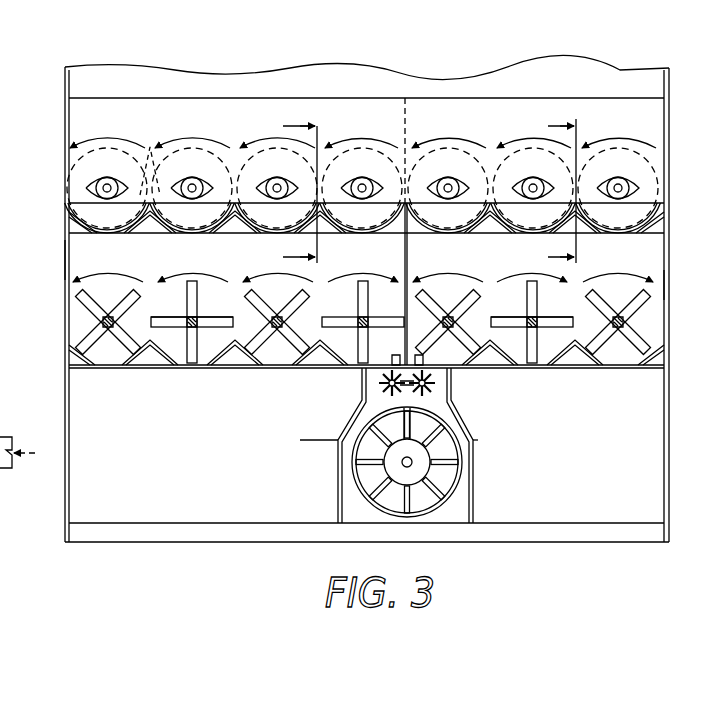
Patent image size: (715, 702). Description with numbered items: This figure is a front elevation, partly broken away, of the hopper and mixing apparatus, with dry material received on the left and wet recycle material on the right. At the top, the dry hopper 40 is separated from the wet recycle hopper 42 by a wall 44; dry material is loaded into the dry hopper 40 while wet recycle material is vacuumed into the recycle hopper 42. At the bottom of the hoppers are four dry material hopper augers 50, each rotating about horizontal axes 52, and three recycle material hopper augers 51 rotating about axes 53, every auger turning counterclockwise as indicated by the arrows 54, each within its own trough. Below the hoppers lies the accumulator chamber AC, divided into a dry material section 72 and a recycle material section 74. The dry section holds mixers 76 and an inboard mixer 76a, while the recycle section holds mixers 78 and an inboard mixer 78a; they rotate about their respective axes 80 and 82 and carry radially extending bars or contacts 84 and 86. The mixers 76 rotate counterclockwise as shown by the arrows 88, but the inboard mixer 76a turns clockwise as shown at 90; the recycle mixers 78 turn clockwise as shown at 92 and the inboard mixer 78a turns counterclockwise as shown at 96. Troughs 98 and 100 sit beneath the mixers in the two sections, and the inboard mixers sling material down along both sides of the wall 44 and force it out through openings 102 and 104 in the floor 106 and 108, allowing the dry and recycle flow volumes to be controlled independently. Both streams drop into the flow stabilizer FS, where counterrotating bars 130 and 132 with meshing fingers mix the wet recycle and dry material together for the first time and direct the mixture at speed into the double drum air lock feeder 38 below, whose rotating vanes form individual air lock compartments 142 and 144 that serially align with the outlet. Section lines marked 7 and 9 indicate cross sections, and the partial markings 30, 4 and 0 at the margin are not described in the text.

The double drum air lock feeder 38 is at (453, 483).
The dry hopper 40 is at (240, 106).
The wet recycle hopper 42 is at (556, 106).
The wall 44 is at (406, 122).
The dry material hopper augers 50 is at (149, 160).
The recycle material hopper augers 51 is at (487, 226).
The horizontal axes 52 is at (203, 171).
The axes 53 is at (440, 187).
The arrows 54 is at (203, 147).
The section line 7 is at (553, 191).
The section line 9 is at (290, 191).
The dry material section 72 is at (71, 266).
The recycle material section 74 is at (662, 283).
The mixers 76 is at (111, 352).
The inboard mixer 76a is at (356, 410).
The mixers 78 is at (569, 341).
The inboard mixer 78a is at (498, 445).
The axes 80 is at (199, 315).
The axes 82 is at (540, 318).
The radially extending bars or contacts 84 is at (186, 301).
The radially extending bars or contacts 86 is at (523, 302).
The arrows 88 is at (222, 274).
The arrow 90 is at (359, 266).
The arrows 92 is at (609, 269).
The arrow 96 is at (425, 269).
The trough 98 is at (236, 367).
The trough 100 is at (549, 368).
The opening 102 is at (389, 352).
The opening 104 is at (439, 352).
The floor 106 is at (343, 353).
The floor 108 is at (497, 370).
The counterrotating bar 130 is at (438, 408).
The counterrotating bar 132 is at (441, 388).
The air lock compartment 142 is at (300, 437).
The air lock compartment 144 is at (470, 445).
The flow stabilizer FS is at (336, 445).
The accumulator chamber AC is at (64, 312).
The feed conduit 30 is at (0, 479).
The partial label 4 is at (6, 26).
The partial label 0 is at (2, 538).